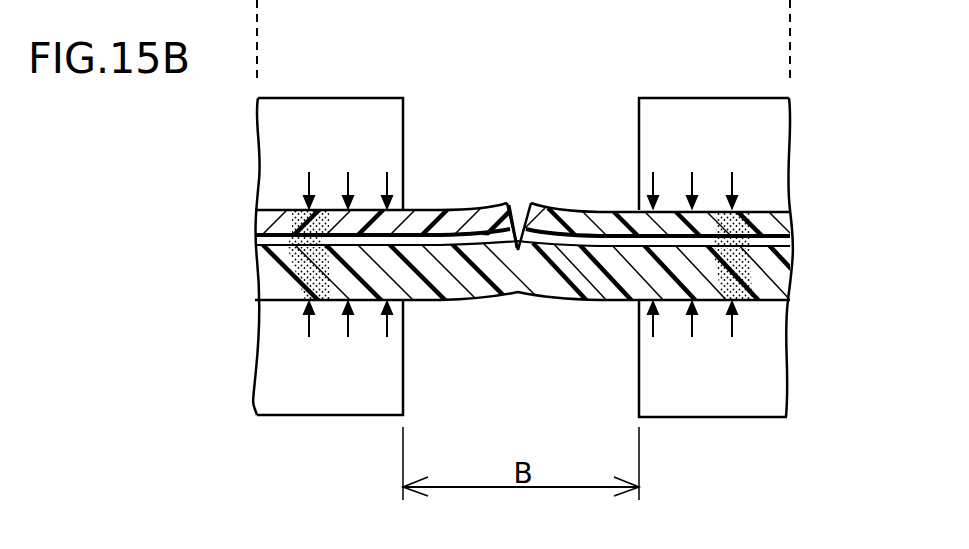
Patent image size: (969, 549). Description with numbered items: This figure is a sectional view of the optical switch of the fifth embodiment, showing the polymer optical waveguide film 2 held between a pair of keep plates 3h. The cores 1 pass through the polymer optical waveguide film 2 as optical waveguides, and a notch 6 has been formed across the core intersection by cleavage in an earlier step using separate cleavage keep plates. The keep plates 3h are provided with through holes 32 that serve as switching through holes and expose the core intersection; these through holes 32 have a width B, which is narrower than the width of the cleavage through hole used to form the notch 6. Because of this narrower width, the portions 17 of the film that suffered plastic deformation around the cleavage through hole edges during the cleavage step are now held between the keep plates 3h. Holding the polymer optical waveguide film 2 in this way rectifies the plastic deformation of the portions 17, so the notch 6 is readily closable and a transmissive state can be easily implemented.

The keep plates 3h is at (320, 118).
The through holes 32 is at (427, 160).
The cores 1 is at (468, 206).
The notch 6 is at (531, 205).
The polymer optical waveguide film 2 is at (817, 212).
The portions 17 is at (268, 284).